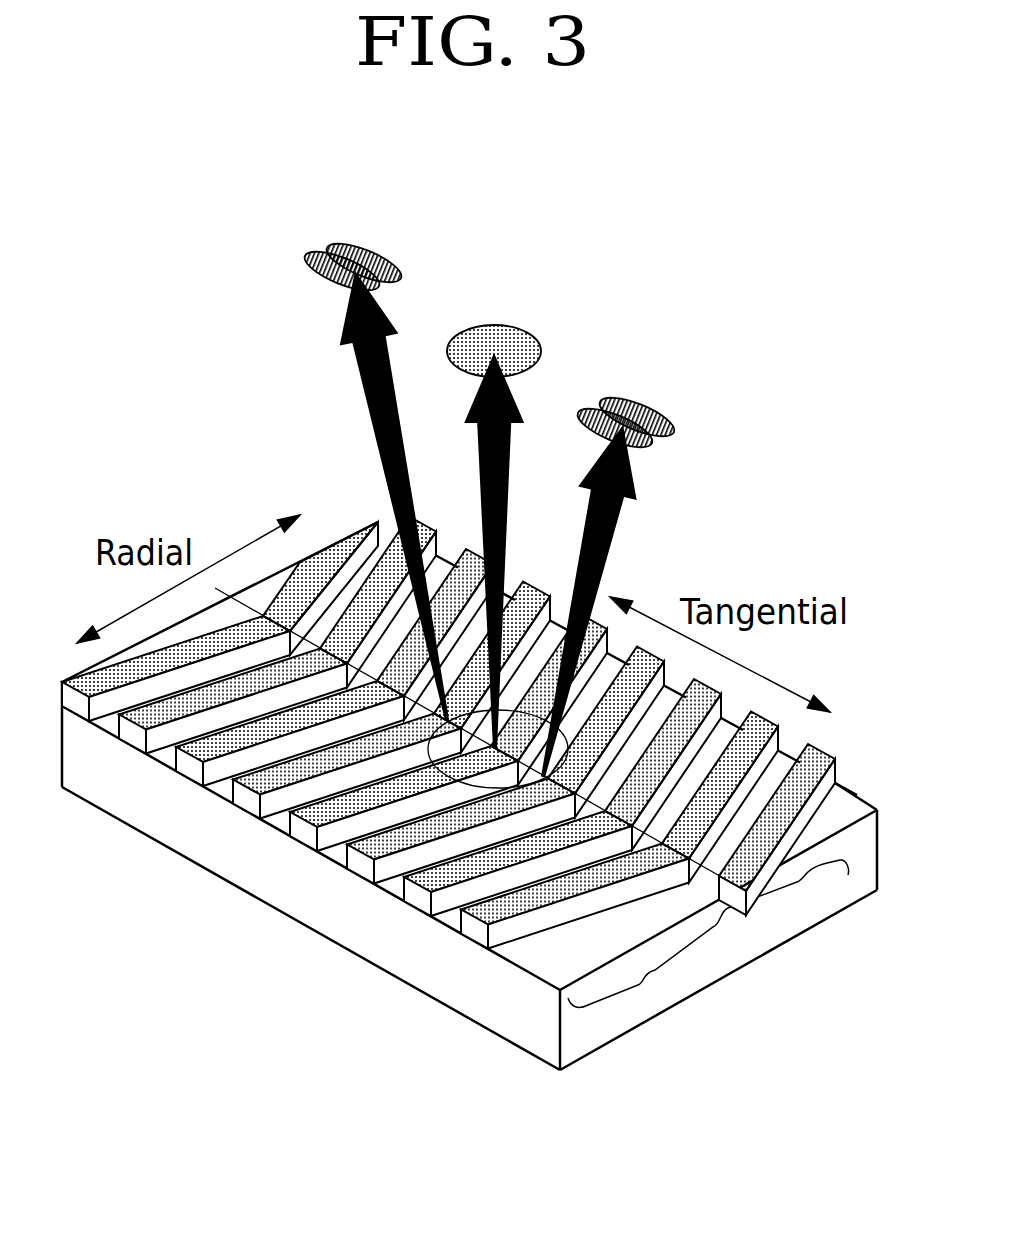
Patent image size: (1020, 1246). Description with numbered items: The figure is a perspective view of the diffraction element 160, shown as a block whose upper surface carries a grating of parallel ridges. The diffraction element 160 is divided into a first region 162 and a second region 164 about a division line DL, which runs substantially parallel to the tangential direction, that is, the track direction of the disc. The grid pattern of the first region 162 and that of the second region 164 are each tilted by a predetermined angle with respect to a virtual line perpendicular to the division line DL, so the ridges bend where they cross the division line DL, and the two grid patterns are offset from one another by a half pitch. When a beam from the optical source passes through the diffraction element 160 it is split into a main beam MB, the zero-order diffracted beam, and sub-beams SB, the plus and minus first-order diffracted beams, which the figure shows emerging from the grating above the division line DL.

The diffraction element 160 is at (907, 927).
The first region 162 is at (645, 978).
The second region 164 is at (840, 860).
The division line DL is at (746, 891).
The main beam MB is at (497, 325).
The sub-beam SB is at (352, 242).